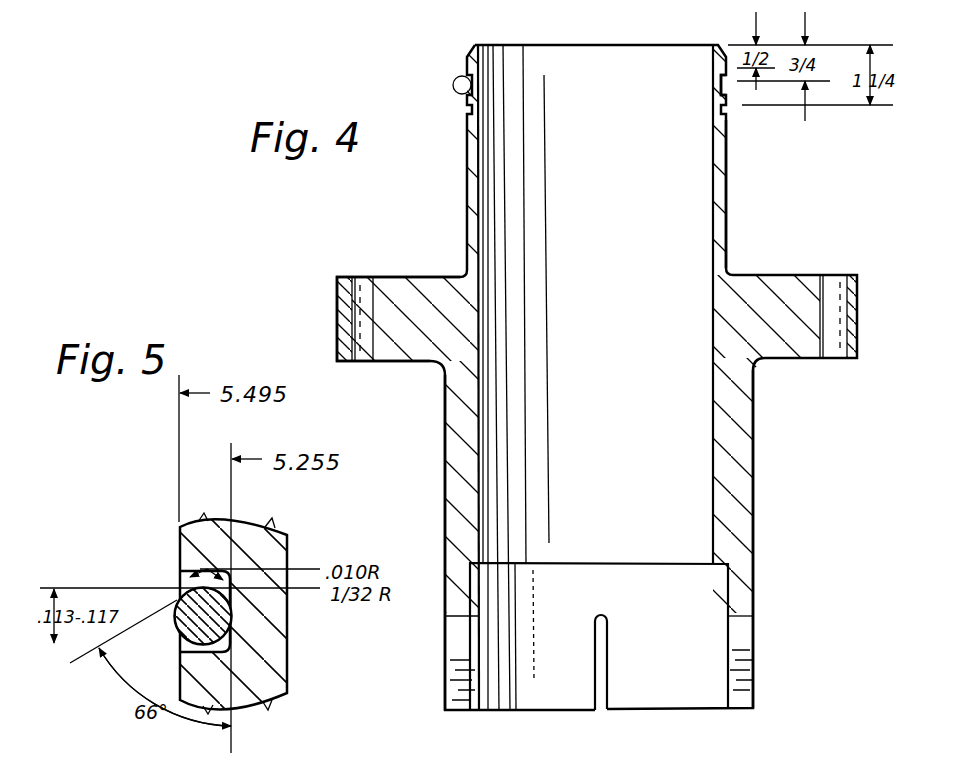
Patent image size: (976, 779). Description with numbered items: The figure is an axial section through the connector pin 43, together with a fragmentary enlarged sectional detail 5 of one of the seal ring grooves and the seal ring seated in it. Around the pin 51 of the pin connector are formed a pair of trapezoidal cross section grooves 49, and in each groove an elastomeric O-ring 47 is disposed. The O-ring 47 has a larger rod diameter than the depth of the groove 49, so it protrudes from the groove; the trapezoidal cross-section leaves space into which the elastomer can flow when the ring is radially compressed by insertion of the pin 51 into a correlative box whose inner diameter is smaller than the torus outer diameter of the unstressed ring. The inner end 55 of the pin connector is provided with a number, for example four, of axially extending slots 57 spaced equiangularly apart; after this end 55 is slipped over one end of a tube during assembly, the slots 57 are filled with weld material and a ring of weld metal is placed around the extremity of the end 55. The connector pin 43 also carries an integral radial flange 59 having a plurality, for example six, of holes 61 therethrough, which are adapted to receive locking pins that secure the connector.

In FIG. 4, the detail area shown in FIG. 5 is at (456, 78).
In FIG. 4, the connector pin 43 is at (466, 192).
In FIG. 5, the elastomeric O-ring 47 is at (193, 606).
In FIG. 4, the trapezoidal cross section groove 49 is at (727, 88).
In FIG. 5, the trapezoidal cross section groove 49 is at (40, 644).
In FIG. 4, the pin 51 is at (730, 202).
In FIG. 4, the inner end of the pin connector 55 is at (755, 435).
In FIG. 4, the axially extending slot 57 is at (740, 637).
In FIG. 4, the integral radial flange 59 is at (422, 282).
In FIG. 4, the hole 61 is at (363, 285).